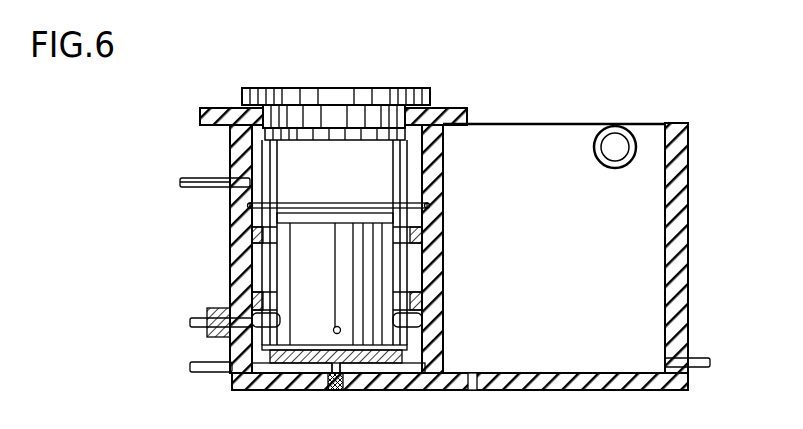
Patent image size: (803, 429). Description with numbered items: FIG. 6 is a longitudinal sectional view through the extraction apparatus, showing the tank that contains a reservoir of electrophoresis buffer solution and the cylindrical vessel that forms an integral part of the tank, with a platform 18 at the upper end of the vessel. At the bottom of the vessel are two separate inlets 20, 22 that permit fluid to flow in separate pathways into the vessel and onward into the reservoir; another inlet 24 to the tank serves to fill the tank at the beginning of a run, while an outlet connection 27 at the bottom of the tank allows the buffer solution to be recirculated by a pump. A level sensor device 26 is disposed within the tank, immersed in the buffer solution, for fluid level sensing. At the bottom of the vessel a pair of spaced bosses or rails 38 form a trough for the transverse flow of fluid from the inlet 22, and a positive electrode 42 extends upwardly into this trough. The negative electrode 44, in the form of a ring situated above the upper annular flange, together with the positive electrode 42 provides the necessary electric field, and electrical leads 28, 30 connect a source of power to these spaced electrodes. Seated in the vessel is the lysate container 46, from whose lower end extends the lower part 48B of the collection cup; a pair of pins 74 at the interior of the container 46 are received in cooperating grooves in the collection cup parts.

The platform 18 is at (222, 108).
The inlet 20 is at (195, 315).
The inlet 22 is at (195, 361).
The inlet 24 is at (706, 358).
The level sensor device 26 is at (603, 150).
The outlet connection 27 is at (473, 372).
The electrical lead 28 is at (211, 186).
The electrical lead 30 is at (335, 392).
The bosses or rails 38 is at (398, 370).
The positive electrode 42 is at (328, 368).
The negative electrode 44 is at (358, 200).
The lysate container 46 is at (410, 90).
The lower part of collection cup 48B is at (413, 352).
The pins 74 is at (334, 327).